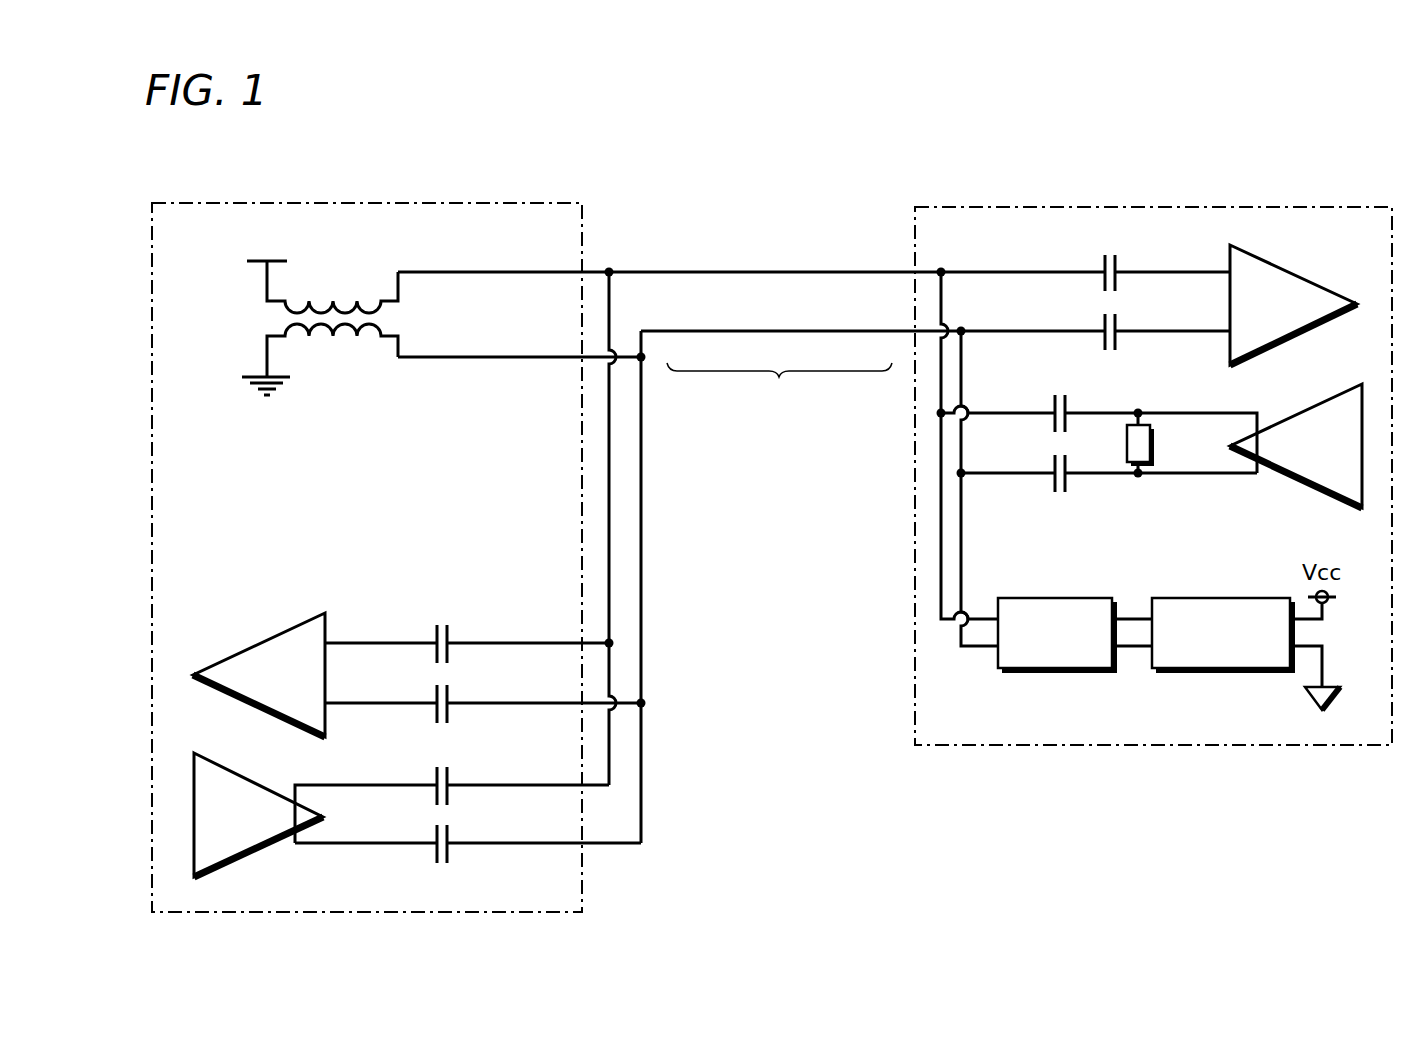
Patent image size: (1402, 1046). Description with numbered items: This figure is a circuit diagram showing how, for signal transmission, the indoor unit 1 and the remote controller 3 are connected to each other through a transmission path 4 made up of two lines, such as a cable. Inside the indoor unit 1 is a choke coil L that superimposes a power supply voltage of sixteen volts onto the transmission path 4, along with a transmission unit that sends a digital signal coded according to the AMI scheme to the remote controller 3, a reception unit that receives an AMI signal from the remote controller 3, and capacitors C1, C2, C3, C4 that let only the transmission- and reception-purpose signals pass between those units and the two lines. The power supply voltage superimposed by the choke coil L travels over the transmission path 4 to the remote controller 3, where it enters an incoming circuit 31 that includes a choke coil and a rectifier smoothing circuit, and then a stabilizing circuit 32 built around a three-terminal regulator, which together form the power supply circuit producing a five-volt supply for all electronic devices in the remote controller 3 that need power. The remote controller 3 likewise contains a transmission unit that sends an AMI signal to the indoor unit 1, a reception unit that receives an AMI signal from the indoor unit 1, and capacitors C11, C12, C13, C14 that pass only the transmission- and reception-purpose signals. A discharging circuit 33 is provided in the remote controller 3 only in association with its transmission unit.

The indoor unit 1 is at (382, 203).
The remote controller 3 is at (1162, 207).
The transmission path 4 is at (779, 391).
The incoming circuit 31 is at (1046, 598).
The stabilizing circuit 32 is at (1227, 598).
The discharging circuit 33 is at (1152, 446).
The choke coil L is at (382, 318).
The capacitor C1 is at (467, 640).
The capacitor C2 is at (483, 700).
The capacitor C3 is at (452, 801).
The capacitor C4 is at (468, 840).
The capacitor C11 is at (1140, 266).
The capacitor C12 is at (1140, 326).
The capacitor C13 is at (1128, 428).
The capacitor C14 is at (1128, 468).